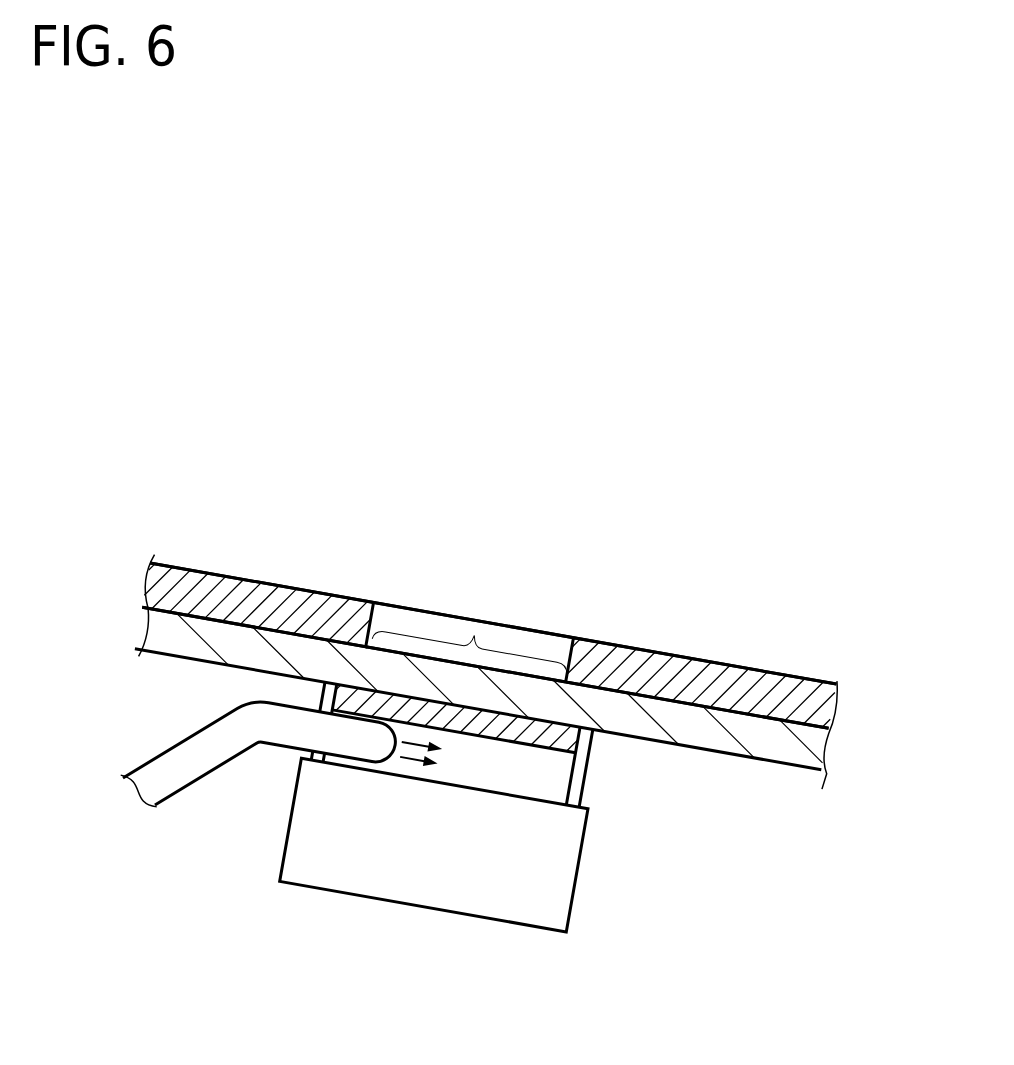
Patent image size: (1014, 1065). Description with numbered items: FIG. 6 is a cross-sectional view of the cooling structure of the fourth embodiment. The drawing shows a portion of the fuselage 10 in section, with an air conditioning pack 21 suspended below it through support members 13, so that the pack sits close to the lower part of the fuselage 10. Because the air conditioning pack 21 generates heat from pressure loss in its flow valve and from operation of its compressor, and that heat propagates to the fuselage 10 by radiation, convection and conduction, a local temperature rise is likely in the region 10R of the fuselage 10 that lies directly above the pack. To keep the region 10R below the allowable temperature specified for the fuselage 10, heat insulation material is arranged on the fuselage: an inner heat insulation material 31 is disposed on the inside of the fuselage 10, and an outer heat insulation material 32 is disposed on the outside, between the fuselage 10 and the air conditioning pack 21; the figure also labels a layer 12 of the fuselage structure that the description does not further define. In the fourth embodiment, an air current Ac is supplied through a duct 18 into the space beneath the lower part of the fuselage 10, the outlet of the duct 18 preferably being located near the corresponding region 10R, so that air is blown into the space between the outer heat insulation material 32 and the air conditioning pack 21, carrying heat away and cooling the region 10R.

The fuselage 10 is at (222, 618).
The region of the fuselage 10R is at (470, 631).
The roof panel 12 is at (497, 491).
The support member 13 is at (318, 702).
The duct 18 is at (150, 758).
The air conditioning pack 21 is at (290, 827).
The inner heat insulation material 31 is at (695, 660).
The outer heat insulation material 32 is at (525, 743).
The air current Ac is at (437, 757).